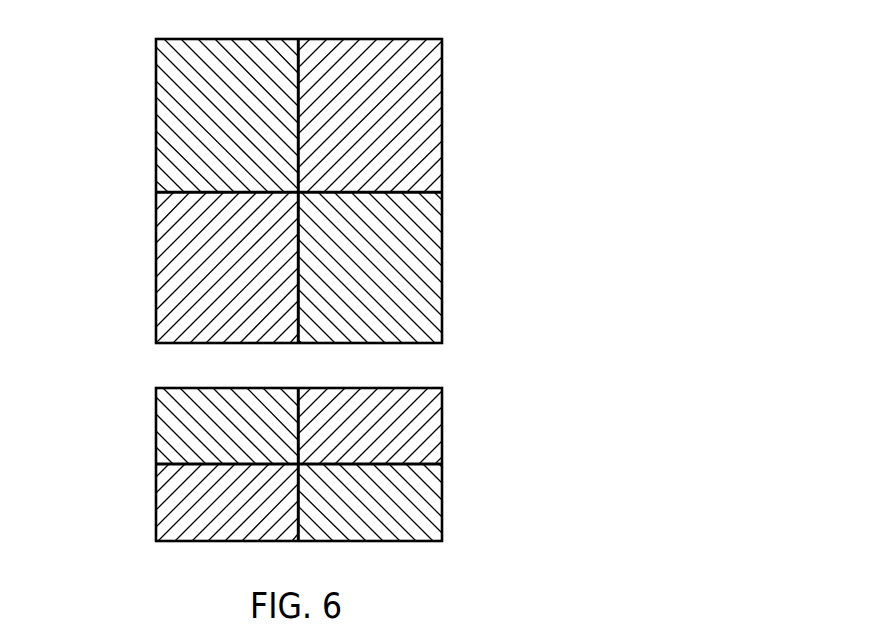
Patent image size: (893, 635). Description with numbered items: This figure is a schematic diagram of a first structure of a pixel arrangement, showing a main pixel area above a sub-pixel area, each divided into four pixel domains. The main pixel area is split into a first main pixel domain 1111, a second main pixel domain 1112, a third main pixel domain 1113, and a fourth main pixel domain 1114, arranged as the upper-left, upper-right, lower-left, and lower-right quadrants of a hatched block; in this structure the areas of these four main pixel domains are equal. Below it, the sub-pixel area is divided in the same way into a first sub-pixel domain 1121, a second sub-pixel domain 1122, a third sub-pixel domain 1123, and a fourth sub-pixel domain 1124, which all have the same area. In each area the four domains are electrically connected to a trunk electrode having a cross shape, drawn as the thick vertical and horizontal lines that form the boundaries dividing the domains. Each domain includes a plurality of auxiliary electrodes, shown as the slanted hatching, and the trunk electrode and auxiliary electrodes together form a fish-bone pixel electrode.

The first main pixel domain 1111 is at (163, 121).
The second main pixel domain 1112 is at (418, 107).
The third main pixel domain 1113 is at (165, 272).
The fourth main pixel domain 1114 is at (417, 268).
The first sub-pixel domain 1121 is at (164, 422).
The second sub-pixel domain 1122 is at (420, 413).
The third sub-pixel domain 1123 is at (164, 508).
The fourth sub-pixel domain 1124 is at (420, 498).